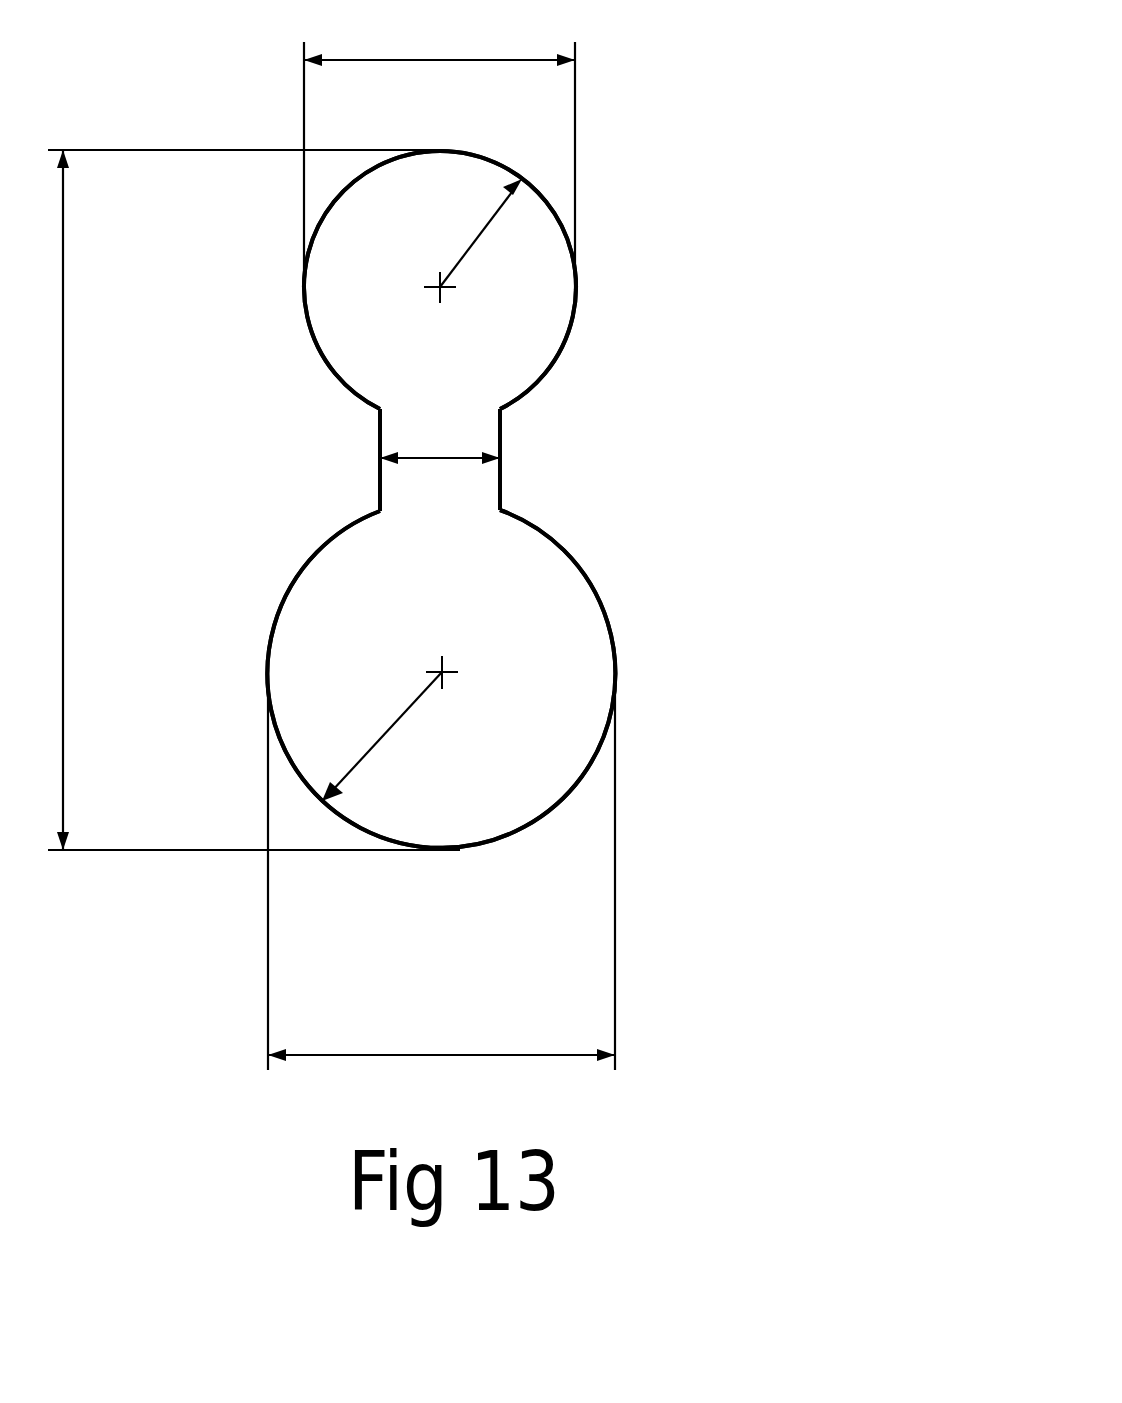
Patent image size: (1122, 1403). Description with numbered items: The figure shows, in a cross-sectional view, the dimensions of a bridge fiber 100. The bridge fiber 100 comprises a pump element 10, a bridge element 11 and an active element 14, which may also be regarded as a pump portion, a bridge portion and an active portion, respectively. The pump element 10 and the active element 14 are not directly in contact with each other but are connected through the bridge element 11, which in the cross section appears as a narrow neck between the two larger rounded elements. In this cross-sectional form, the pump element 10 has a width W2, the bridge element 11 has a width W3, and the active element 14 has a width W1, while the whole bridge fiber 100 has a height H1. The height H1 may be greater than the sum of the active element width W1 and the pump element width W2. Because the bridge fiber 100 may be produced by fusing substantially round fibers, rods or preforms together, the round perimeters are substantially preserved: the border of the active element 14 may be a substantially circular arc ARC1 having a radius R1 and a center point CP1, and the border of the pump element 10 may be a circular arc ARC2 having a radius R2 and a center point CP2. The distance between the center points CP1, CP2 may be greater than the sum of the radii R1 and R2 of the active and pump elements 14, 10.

The bridge fiber 100 is at (620, 446).
The active element 14 is at (812, 162).
The bridge element 11 is at (747, 400).
The pump element 10 is at (822, 515).
The width of the active element W1 is at (439, 147).
The width of the pump element W2 is at (441, 870).
The width of the bridge element W3 is at (440, 434).
The height of the bridge fiber H1 is at (254, 500).
The radius of the active element arc R1 is at (468, 233).
The radius of the pump element arc R2 is at (382, 736).
The center point of the active element arc CP1 is at (437, 293).
The center point of the pump element arc CP2 is at (446, 672).
The circular arc of the active element ARC1 is at (575, 313).
The circular arc of the pump element ARC2 is at (613, 638).